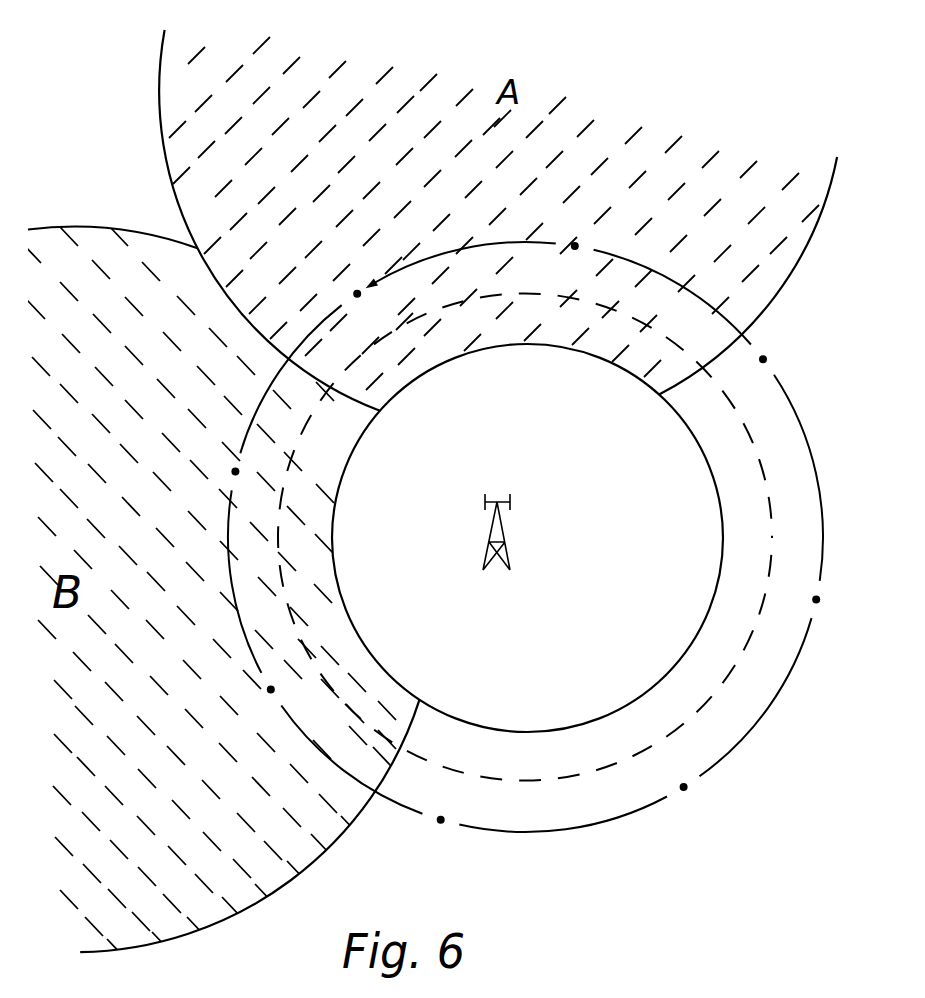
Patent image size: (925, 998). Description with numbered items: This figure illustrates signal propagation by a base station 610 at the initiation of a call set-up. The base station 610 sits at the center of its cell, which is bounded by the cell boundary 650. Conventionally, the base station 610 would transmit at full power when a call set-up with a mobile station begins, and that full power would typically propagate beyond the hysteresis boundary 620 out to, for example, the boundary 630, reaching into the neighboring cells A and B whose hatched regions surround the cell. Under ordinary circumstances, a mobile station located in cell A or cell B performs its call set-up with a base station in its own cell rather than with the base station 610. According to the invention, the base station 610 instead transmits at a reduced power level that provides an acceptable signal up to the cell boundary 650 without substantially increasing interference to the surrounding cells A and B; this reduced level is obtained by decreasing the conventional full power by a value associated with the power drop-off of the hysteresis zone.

The base station 610 is at (505, 542).
The hysteresis boundary 620 is at (772, 522).
The boundary 630 is at (748, 735).
The cell boundary 650 is at (392, 677).